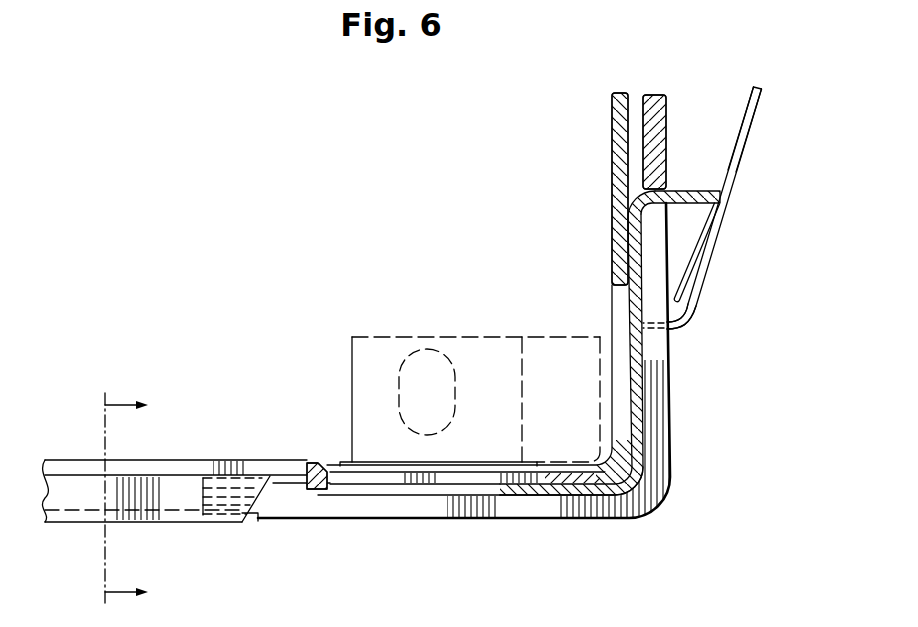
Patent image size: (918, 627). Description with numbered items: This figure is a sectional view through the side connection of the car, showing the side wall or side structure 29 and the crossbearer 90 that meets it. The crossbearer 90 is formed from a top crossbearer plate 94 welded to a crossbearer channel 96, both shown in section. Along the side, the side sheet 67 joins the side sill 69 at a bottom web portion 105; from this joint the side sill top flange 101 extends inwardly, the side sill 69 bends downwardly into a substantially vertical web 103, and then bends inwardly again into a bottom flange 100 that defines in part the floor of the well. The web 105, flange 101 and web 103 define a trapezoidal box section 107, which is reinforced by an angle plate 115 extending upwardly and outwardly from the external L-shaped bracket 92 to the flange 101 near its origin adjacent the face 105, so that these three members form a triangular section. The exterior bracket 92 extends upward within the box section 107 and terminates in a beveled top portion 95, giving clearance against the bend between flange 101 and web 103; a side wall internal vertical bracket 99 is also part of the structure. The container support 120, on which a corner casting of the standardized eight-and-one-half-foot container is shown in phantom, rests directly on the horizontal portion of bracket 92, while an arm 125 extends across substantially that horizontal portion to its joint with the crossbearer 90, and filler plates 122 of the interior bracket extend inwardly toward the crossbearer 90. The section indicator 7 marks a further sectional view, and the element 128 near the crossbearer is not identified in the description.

The section line 7- 7 is at (135, 501).
The side structure 29 is at (612, 107).
The side sheet 67 is at (744, 155).
The side sill 69 is at (642, 412).
The crossbearer 90 is at (184, 483).
The external L-shaped bracket 92 is at (669, 367).
The top crossbearer plate 94 is at (292, 472).
The beveled top portion 95 is at (631, 217).
The crossbearer channel 96 is at (196, 516).
The side wall internal vertical bracket 99 is at (666, 112).
The bottom flange 100 is at (592, 497).
The side sill top flange 101 is at (694, 190).
The web 103 is at (627, 294).
The bottom web portion 105 is at (725, 218).
The trapezoidal box section 107 is at (714, 280).
The angle plate 115 is at (700, 250).
The container support 120 is at (355, 492).
The filler plates 122 is at (445, 489).
The arm 125 is at (386, 481).
The wedge piece 128 is at (271, 483).